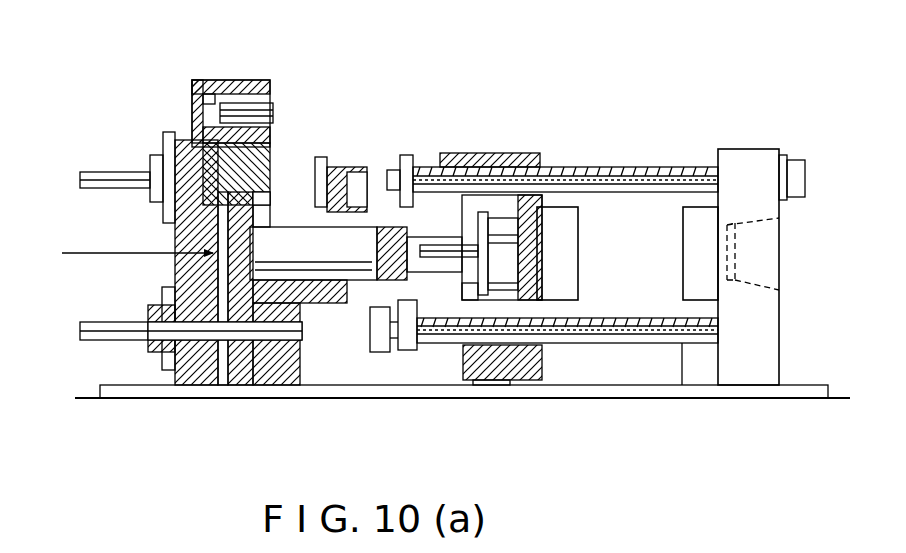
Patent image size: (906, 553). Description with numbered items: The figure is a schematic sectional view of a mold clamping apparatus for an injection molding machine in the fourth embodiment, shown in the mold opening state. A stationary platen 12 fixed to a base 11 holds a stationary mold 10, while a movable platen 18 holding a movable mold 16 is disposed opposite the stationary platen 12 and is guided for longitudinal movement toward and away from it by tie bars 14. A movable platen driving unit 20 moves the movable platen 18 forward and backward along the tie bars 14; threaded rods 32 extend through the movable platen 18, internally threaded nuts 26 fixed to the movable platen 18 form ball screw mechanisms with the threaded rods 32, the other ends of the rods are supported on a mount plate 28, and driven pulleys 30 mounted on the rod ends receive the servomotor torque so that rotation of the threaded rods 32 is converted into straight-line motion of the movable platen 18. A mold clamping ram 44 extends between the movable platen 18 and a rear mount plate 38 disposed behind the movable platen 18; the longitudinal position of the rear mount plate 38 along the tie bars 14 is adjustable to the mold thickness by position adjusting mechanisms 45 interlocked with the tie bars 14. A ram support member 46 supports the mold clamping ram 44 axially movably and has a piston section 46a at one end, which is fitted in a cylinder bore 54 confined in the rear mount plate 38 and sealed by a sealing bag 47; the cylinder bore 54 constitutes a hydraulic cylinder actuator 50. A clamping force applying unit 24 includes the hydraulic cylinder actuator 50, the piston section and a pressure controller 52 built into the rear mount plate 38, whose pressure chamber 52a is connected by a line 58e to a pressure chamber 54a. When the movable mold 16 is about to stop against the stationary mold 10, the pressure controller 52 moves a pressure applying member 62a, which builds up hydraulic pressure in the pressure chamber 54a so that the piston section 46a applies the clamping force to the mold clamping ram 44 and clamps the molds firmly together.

The stationary mold 10 is at (690, 252).
The base 11 is at (455, 387).
The stationary platen 12 is at (742, 150).
The tie bars 14 is at (620, 165).
The movable mold 16 is at (570, 237).
The movable platen 18 is at (510, 150).
The movable platen driving unit 20 is at (600, 347).
The clamping force applying unit 24 is at (48, 268).
The internally threaded nuts 26 is at (505, 347).
The mount plate 28 is at (415, 150).
The driven pulleys 30 is at (380, 352).
The threaded rods 32 is at (680, 345).
The rear mount plate 38 is at (218, 373).
The mold clamping ram 44 is at (370, 215).
The position adjusting mechanisms 45 is at (152, 362).
The ram support member 46 is at (290, 215).
The piston section 46a is at (245, 367).
The sealing bag 47 is at (283, 135).
The hydraulic cylinder actuator 50 is at (175, 232).
The pressure controller 52 is at (235, 78).
The pressure chamber 52a is at (192, 90).
The cylinder bore 54 is at (273, 360).
The pressure chamber 54a is at (215, 270).
The line 58e is at (162, 148).
The pressure applying member 62a is at (275, 128).